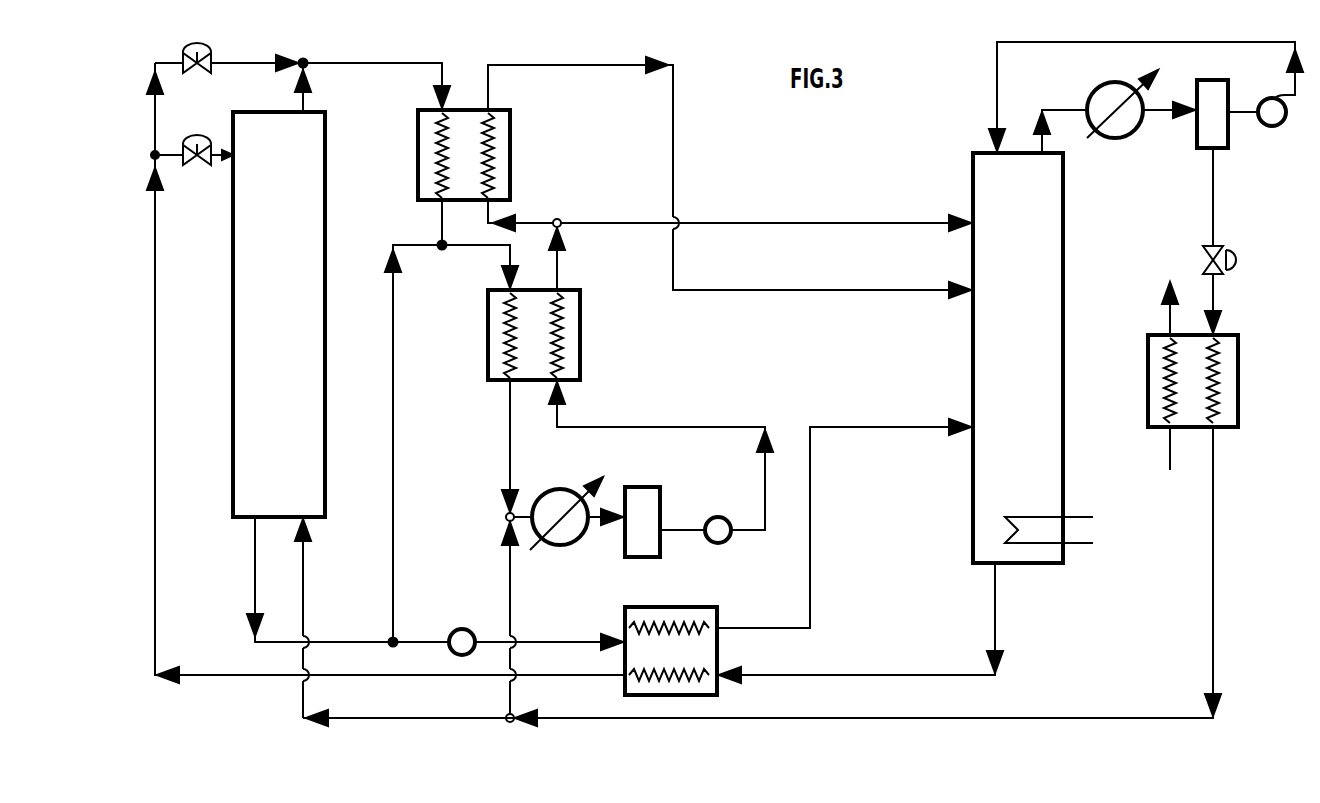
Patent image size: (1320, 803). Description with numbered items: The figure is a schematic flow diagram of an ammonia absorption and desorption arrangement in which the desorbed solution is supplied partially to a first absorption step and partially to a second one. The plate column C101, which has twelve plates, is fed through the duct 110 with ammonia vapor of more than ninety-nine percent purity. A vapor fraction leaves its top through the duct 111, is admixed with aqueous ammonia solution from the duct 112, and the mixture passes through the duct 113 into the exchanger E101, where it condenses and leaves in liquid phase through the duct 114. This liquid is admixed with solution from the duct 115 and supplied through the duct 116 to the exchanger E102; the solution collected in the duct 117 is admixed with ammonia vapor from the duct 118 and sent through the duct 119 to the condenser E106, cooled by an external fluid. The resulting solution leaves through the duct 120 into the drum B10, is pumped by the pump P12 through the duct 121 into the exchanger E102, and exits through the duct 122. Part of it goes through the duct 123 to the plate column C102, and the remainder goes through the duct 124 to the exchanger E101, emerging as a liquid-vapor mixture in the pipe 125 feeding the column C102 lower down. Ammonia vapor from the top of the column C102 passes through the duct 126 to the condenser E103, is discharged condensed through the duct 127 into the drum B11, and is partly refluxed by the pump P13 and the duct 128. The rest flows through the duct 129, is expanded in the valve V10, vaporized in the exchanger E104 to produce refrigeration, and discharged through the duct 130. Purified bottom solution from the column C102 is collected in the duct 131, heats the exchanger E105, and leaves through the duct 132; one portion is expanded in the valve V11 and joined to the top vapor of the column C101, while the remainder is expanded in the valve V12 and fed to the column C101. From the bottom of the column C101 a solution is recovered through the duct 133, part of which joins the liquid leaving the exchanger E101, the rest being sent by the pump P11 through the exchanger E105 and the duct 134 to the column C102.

The plate column C101 is at (279, 314).
The plate column C102 is at (1033, 358).
The exchanger E101 is at (510, 152).
The exchanger E102 is at (580, 343).
The condenser E103 is at (1115, 138).
The exchanger E104 is at (1238, 322).
The exchanger E105 is at (717, 607).
The condenser E106 is at (560, 545).
The drum B10 is at (642, 557).
The drum B11 is at (1228, 148).
The pump P11 is at (460, 628).
The pump P12 is at (718, 543).
The pump P13 is at (1280, 126).
The valve V10 is at (1237, 260).
The valve V11 is at (199, 74).
The valve V12 is at (199, 166).
The duct 110 is at (305, 578).
The duct 111 is at (307, 97).
The duct 112 is at (258, 66).
The duct 113 is at (400, 66).
The duct 114 is at (440, 217).
The duct 115 is at (396, 358).
The duct 116 is at (508, 257).
The duct 117 is at (508, 462).
The duct 118 is at (507, 548).
The duct 119 is at (522, 510).
The duct 120 is at (597, 512).
The duct 121 is at (654, 425).
The duct 122 is at (562, 263).
The duct 123 is at (626, 220).
The duct 124 is at (542, 220).
The pipe 125 is at (672, 148).
The duct 126 is at (1046, 103).
The duct 127 is at (1165, 105).
The duct 128 is at (995, 112).
The duct 129 is at (1210, 212).
The duct 130 is at (1086, 716).
The duct 131 is at (912, 673).
The duct 132 is at (560, 678).
The duct 133 is at (253, 578).
The duct 134 is at (858, 425).